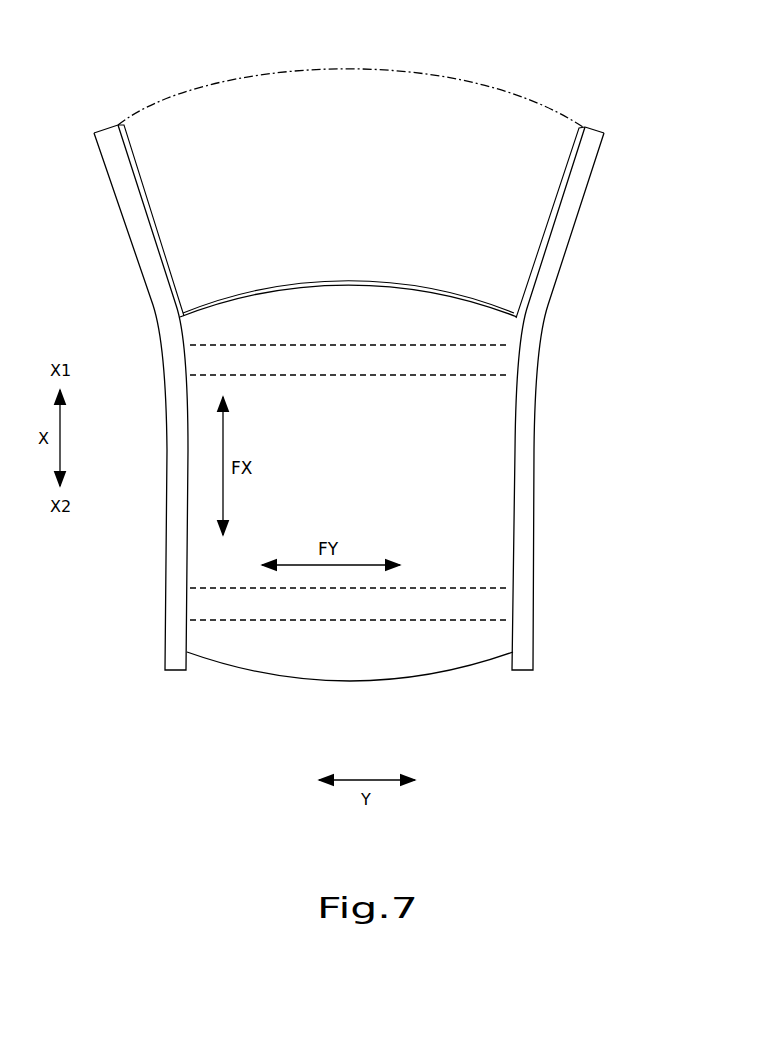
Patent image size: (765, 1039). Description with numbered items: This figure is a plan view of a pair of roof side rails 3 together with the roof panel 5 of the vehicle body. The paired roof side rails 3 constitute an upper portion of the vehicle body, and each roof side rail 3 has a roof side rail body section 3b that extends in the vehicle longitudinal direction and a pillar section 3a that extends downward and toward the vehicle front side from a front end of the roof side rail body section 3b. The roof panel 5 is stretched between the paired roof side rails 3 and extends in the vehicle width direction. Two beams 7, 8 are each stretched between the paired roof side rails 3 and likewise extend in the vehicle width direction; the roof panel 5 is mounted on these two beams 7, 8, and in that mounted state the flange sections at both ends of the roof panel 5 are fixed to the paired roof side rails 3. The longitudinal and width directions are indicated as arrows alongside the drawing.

The roof side rail 3 is at (378, 98).
The pillar section 3a is at (138, 228).
The roof side rail body section 3b is at (177, 530).
The roof panel 5 is at (398, 298).
The beam 7 is at (450, 360).
The beam 8 is at (470, 597).